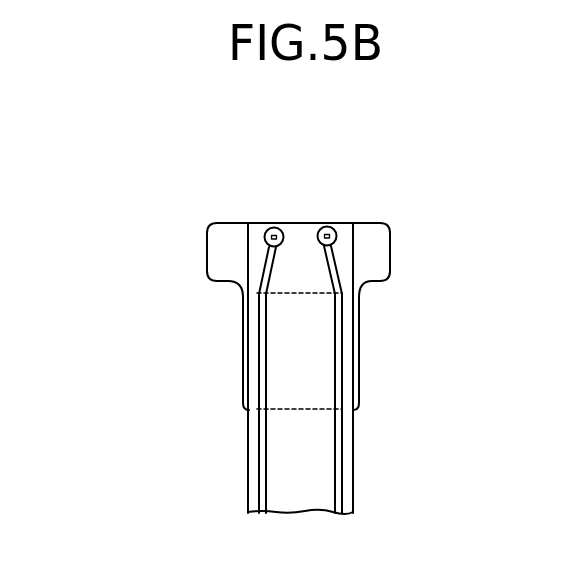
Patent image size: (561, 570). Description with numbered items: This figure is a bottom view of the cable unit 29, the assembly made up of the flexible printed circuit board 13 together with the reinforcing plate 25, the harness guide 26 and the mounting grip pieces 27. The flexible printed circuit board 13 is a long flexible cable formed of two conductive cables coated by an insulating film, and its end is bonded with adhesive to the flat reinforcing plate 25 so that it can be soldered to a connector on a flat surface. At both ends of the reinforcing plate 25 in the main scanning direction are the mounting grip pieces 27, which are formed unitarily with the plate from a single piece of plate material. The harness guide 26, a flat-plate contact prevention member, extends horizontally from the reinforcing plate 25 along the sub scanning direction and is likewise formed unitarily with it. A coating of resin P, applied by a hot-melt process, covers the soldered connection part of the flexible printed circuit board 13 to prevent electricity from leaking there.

The flexible printed circuit board 13 is at (314, 448).
The reinforcing plate 25 is at (295, 237).
The harness guide 26 is at (359, 330).
The mounting grip pieces 27 is at (213, 247).
The cable unit 29 is at (210, 391).
The coating of resin P is at (268, 226).